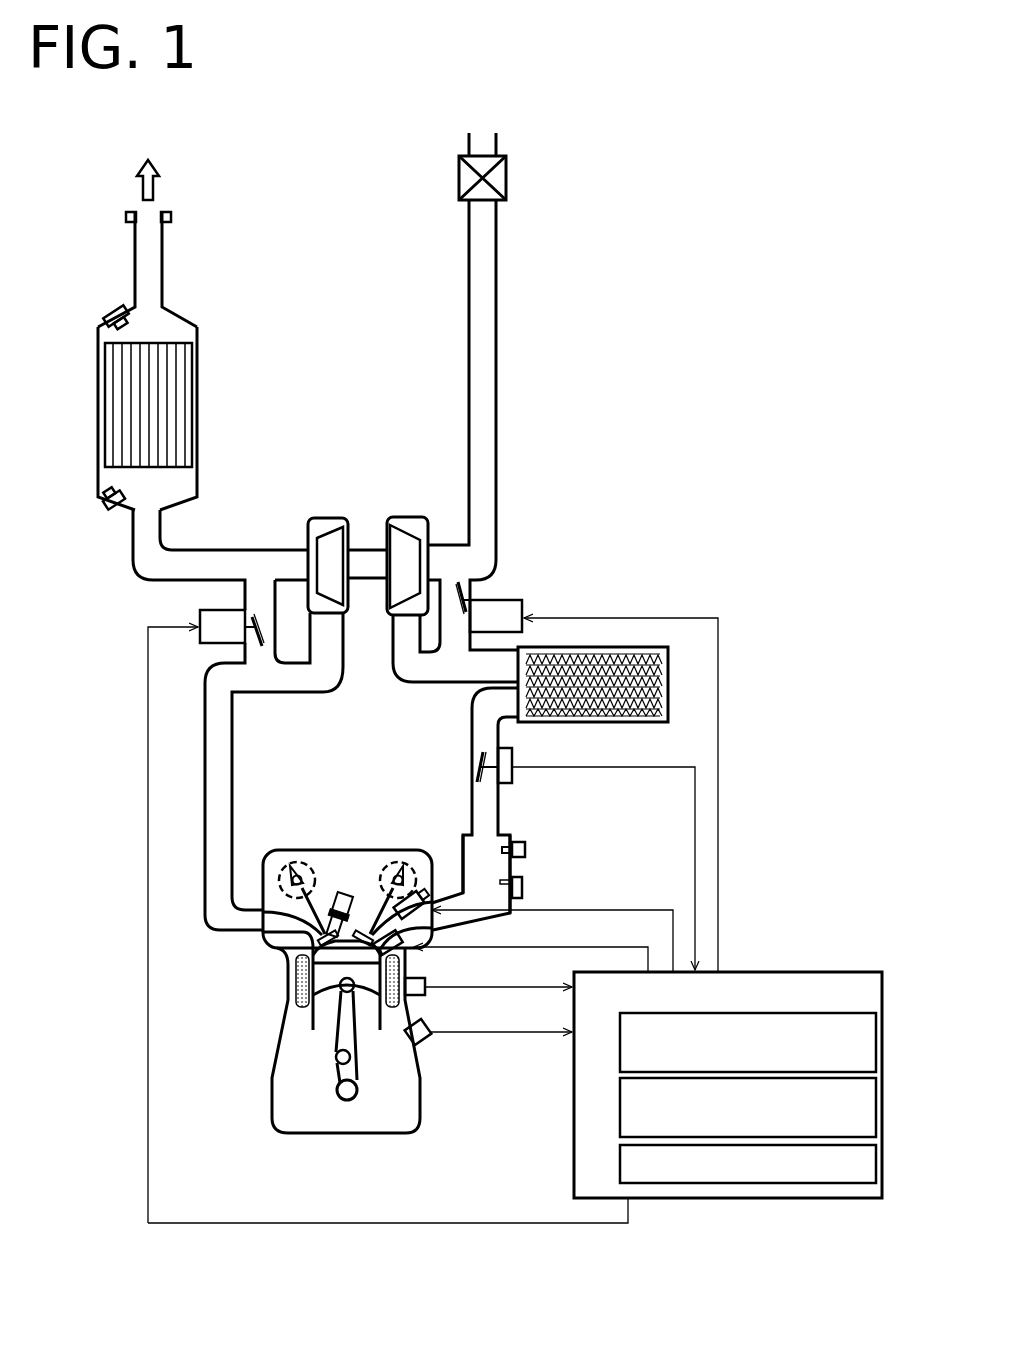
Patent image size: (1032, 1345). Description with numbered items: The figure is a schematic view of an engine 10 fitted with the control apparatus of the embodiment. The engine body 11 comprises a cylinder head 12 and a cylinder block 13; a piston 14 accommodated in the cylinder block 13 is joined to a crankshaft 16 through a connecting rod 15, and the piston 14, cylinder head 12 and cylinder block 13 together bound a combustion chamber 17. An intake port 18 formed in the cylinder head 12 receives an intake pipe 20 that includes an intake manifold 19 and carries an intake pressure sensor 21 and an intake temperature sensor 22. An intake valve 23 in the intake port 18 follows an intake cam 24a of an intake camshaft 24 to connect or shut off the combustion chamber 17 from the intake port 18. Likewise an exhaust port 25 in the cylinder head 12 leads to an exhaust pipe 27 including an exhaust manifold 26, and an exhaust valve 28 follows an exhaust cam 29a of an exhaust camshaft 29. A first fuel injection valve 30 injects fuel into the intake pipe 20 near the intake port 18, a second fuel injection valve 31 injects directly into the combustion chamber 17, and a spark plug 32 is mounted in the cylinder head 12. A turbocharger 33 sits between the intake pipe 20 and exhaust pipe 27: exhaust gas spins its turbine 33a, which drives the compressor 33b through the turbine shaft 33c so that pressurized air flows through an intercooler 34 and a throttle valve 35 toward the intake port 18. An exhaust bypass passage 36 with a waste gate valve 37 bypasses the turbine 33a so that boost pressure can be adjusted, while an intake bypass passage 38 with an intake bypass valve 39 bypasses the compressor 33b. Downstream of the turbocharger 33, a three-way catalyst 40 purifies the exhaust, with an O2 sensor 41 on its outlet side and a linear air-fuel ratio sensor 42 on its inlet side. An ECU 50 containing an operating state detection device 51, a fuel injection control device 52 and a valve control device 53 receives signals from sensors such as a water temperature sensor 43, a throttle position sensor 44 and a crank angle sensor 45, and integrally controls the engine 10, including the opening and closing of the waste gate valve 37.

The engine 10 is at (669, 316).
The engine body 11 is at (363, 795).
The cylinder head 12 is at (268, 852).
The cylinder block 13 is at (290, 1057).
The piston 14 is at (322, 985).
The connecting rod 15 is at (343, 1040).
The crankshaft 16 is at (343, 1097).
The combustion chamber 17 is at (322, 960).
The intake port 18 is at (360, 856).
The intake manifold 19 is at (487, 860).
The intake pipe 20 is at (497, 472).
The intake pressure sensor 21 is at (524, 888).
The intake temperature sensor 22 is at (527, 850).
The intake valve 23 is at (377, 858).
The intake camshaft 24 is at (400, 860).
The intake cam 24a is at (418, 860).
The exhaust port 25 is at (327, 858).
The exhaust manifold 26 is at (282, 920).
The exhaust pipe 27 is at (222, 566).
The exhaust valve 28 is at (315, 941).
The exhaust camshaft 29 is at (297, 860).
The exhaust cam 29a is at (283, 860).
The first fuel injection valve 30 is at (418, 895).
The second fuel injection valve 31 is at (405, 953).
The spark plug 32 is at (341, 852).
The turbocharger 33 is at (373, 490).
The turbine 33a is at (322, 535).
The compressor 33b is at (410, 535).
The turbine shaft 33c is at (368, 562).
The intercooler 34 is at (625, 722).
The throttle valve 35 is at (482, 767).
The exhaust bypass passage 36 is at (232, 612).
The waste gate valve 37 is at (250, 638).
The intake bypass passage 38 is at (462, 595).
The intake bypass valve 39 is at (483, 610).
The three-way catalyst 40 is at (178, 395).
The O2 sensor 41 is at (112, 312).
The linear air-fuel ratio sensor 42 is at (112, 508).
The water temperature sensor 43 is at (428, 995).
The throttle position sensor 44 is at (512, 763).
The crank angle sensor 45 is at (430, 1042).
The electronic control unit 50 is at (745, 970).
The operating state detection device 51 is at (619, 1038).
The fuel injection control device 52 is at (619, 1093).
The valve control device 53 is at (619, 1160).